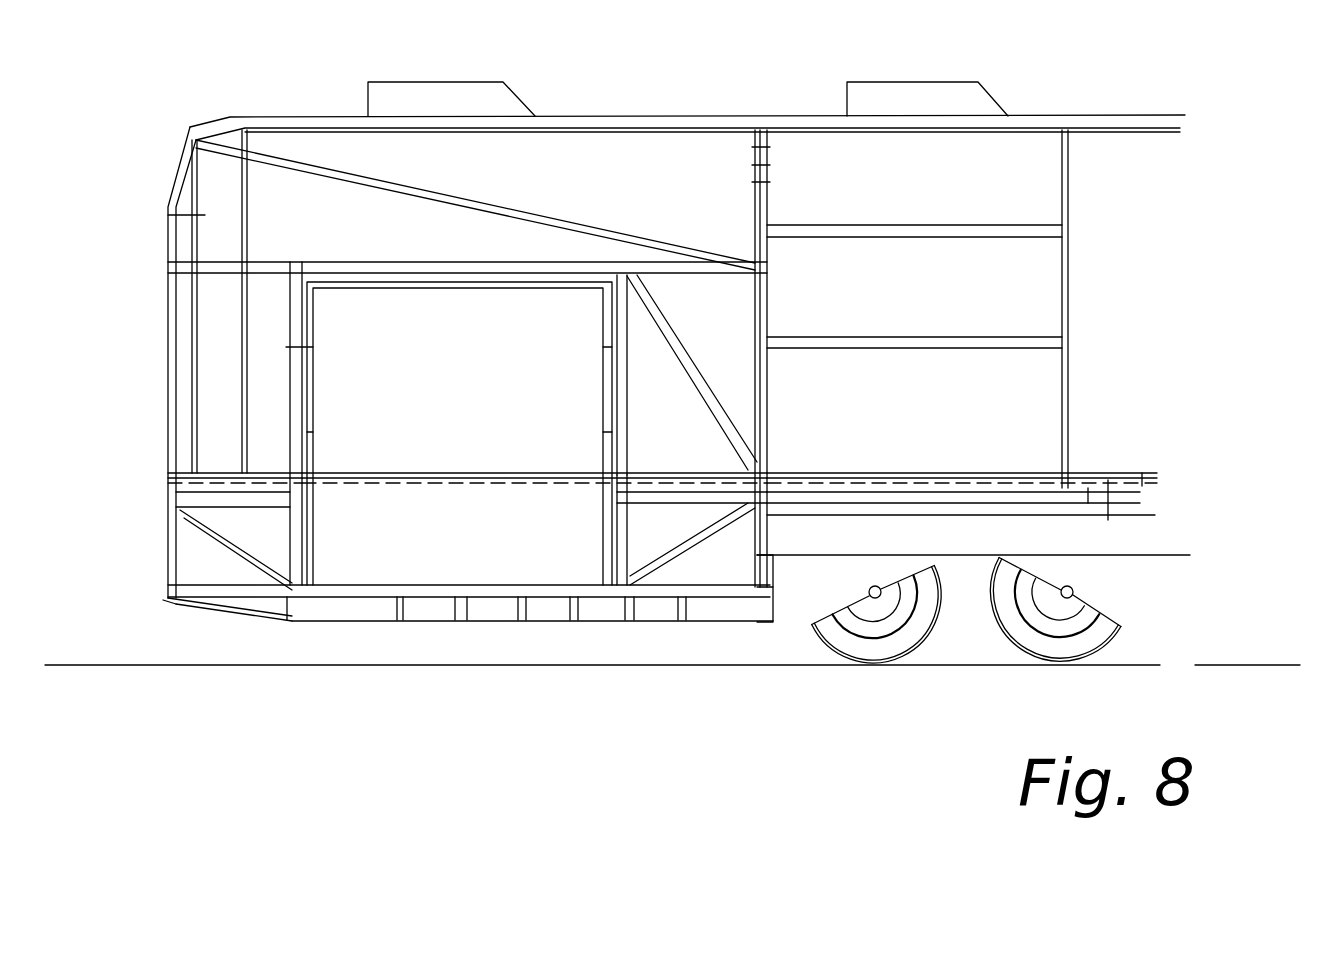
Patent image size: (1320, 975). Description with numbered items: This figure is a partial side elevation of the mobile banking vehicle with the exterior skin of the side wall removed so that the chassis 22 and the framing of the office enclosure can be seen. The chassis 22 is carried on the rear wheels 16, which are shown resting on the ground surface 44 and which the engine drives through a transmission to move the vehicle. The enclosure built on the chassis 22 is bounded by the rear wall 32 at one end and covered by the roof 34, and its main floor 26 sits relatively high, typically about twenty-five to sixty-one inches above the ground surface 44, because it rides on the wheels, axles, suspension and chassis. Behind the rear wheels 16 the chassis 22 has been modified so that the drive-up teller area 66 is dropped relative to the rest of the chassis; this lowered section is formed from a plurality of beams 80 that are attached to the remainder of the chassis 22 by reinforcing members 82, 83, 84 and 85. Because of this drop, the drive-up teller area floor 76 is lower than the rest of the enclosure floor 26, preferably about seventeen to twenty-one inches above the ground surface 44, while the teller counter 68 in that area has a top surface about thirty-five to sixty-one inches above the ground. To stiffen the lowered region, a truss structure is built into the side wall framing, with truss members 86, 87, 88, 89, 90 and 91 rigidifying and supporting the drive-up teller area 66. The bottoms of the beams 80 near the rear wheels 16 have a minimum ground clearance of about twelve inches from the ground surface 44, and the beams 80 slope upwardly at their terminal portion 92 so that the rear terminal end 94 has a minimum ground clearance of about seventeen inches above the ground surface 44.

The rear wheels 16 is at (1018, 637).
The chassis 22 is at (1105, 536).
The floor 26 is at (860, 468).
The rear wall 32 is at (165, 232).
The roof 34 is at (680, 110).
The ground surface 44 is at (1234, 665).
The drive-up teller area 66 is at (425, 332).
The teller counter 68 is at (275, 472).
The drive-up teller area floor 76 is at (400, 580).
The beams 80 is at (470, 618).
The reinforcing member 82 is at (766, 572).
The reinforcing member 83 is at (693, 544).
The reinforcing member 84 is at (622, 533).
The reinforcing member 85 is at (666, 498).
The truss member 86 is at (680, 348).
The truss member 87 is at (620, 390).
The truss member 88 is at (432, 270).
The truss member 89 is at (540, 210).
The truss member 90 is at (641, 128).
The truss member 91 is at (296, 392).
The terminal portion 92 is at (287, 620).
The rear terminal end 94 is at (166, 602).